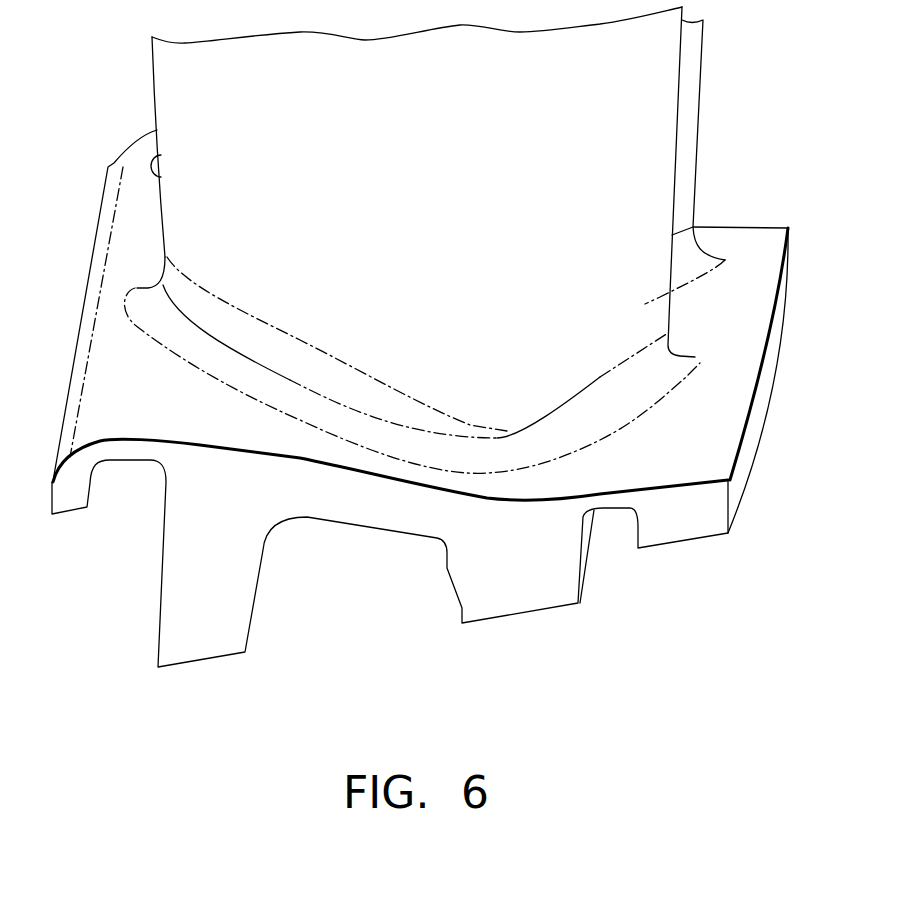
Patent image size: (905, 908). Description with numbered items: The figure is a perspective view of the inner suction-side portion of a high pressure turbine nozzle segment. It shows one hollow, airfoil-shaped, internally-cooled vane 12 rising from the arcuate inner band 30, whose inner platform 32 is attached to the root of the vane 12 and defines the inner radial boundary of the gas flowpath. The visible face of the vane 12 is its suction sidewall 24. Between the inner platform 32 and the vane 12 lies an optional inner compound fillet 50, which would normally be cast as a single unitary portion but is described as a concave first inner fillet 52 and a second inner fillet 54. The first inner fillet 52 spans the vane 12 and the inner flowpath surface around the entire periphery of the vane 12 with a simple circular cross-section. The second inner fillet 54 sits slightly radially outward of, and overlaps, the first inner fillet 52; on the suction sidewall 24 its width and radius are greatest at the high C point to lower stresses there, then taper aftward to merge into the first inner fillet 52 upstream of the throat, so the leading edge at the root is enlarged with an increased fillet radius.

The vane 12 is at (153, 80).
The suction sidewall 24 is at (432, 112).
The inner band 30 is at (68, 378).
The inner platform 32 is at (122, 345).
The inner compound fillet 50 is at (582, 370).
The first inner fillet 52 is at (640, 395).
The second inner fillet 54 is at (298, 366).